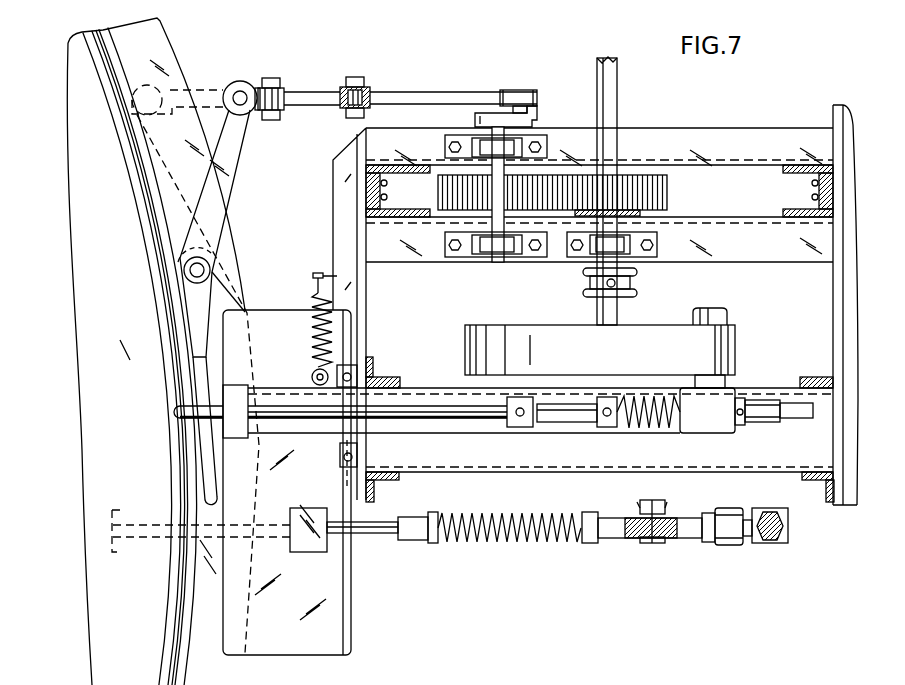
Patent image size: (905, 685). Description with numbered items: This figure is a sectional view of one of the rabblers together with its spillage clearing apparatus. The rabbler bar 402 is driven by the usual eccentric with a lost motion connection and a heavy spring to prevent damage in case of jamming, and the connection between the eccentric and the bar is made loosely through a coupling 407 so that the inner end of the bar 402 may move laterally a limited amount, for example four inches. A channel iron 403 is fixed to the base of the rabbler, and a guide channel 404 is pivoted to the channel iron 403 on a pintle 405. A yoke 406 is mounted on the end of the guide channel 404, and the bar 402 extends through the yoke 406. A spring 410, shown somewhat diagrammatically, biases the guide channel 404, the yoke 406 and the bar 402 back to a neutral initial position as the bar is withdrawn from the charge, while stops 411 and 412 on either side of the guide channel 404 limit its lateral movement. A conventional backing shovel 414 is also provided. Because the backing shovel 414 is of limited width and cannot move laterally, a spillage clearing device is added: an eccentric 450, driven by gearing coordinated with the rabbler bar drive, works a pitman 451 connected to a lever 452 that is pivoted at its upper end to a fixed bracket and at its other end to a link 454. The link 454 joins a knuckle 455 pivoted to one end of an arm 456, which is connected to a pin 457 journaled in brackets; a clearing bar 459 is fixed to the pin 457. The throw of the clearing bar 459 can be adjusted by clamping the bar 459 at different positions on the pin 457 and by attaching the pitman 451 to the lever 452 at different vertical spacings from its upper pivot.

The rabbler bar 402 is at (175, 413).
The channel iron 403 is at (443, 475).
The guide channel 404 is at (453, 430).
The pintle 405 is at (575, 426).
The yoke 406 is at (233, 440).
The coupling 407 is at (708, 423).
The spring 410 is at (342, 333).
The stop 411 is at (357, 372).
The stop 412 is at (357, 447).
The backing shovel 414 is at (545, 540).
The eccentric 450 is at (538, 90).
The pitman 451 is at (423, 91).
The lever 452 is at (370, 86).
The link 454 is at (308, 88).
The knuckle 455 is at (243, 82).
The arm 456 is at (237, 187).
The pin 457 is at (210, 281).
The clearing bar 459 is at (205, 385).